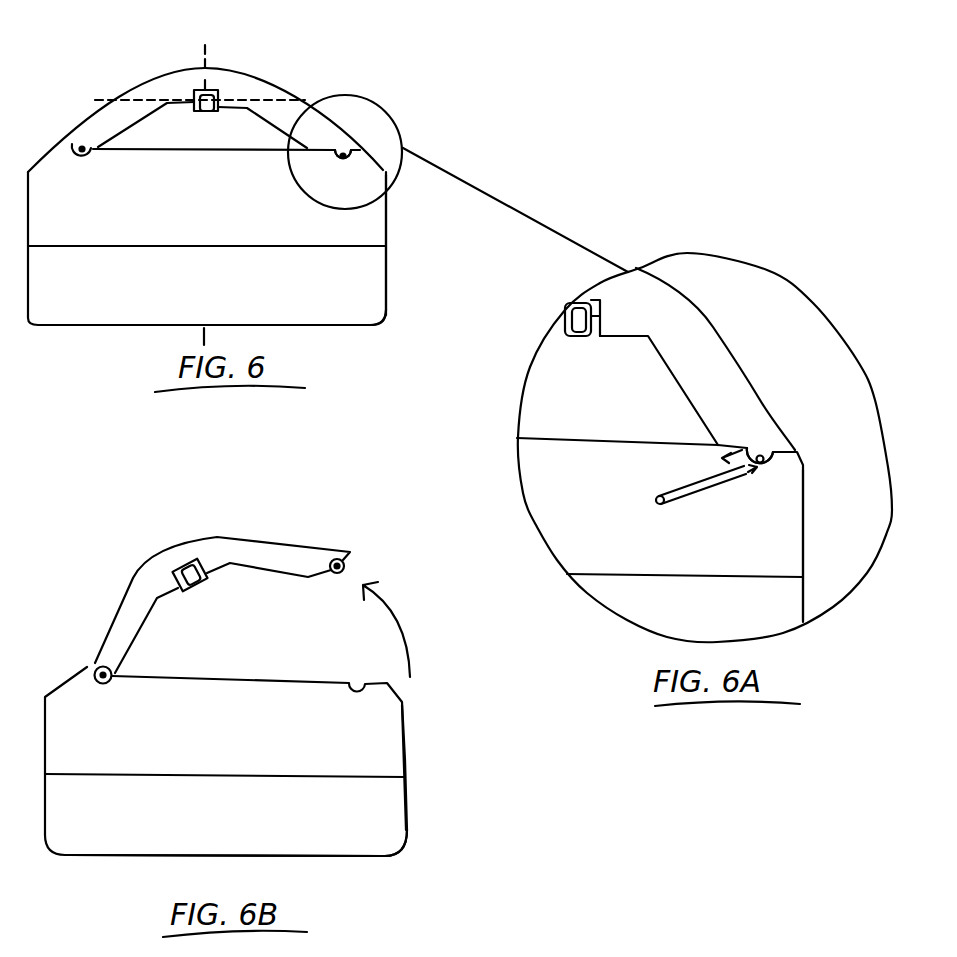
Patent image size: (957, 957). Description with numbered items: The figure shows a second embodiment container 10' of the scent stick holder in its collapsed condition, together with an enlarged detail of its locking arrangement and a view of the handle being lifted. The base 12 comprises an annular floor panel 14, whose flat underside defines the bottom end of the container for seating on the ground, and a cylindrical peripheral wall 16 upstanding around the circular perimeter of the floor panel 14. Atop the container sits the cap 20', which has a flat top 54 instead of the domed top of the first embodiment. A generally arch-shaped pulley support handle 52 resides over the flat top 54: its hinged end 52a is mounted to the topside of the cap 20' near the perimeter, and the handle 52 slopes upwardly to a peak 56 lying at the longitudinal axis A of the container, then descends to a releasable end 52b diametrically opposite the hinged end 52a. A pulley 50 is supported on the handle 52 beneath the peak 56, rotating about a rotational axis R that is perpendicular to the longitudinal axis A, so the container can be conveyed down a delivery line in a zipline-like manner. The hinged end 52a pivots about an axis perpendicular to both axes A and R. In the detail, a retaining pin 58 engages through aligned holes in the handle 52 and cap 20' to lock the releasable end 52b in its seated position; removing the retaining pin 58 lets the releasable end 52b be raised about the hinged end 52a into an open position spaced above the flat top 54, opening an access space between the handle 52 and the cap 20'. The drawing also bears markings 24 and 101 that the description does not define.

In FIG. 6, the container 10' is at (353, 245).
In FIG. 6, the base 12 is at (386, 306).
In FIG. 6A, the base 12 is at (801, 605).
In FIG. 6B, the base 12 is at (393, 845).
In FIG. 6, the floor panel 14 is at (322, 328).
In FIG. 6B, the floor panel 14 is at (346, 857).
In FIG. 6, the cylindrical peripheral wall 16 is at (350, 318).
In FIG. 6B, the cylindrical peripheral wall 16 is at (391, 818).
In FIG. 6, the cap 20' is at (241, 224).
In FIG. 6A, the cap 20' is at (685, 488).
In FIG. 6B, the cap 20' is at (251, 745).
In FIG. 6, the side edge of visor body 24 is at (385, 206).
In FIG. 6A, the side edge of visor body 24 is at (788, 503).
In FIG. 6B, the side edge of visor body 24 is at (392, 760).
In FIG. 6, the pulley 50 is at (207, 113).
In FIG. 6A, the pulley 50 is at (582, 338).
In FIG. 6B, the pulley 50 is at (194, 587).
In FIG. 6, the pulley support handle 52 is at (274, 100).
In FIG. 6A, the pulley support handle 52 is at (700, 328).
In FIG. 6B, the pulley support handle 52 is at (268, 558).
In FIG. 6, the hinged end 52a is at (78, 136).
In FIG. 6B, the hinged end 52a is at (98, 650).
In FIG. 6, the releasable end 52b is at (349, 150).
In FIG. 6A, the releasable end 52b is at (773, 440).
In FIG. 6B, the releasable end 52b is at (329, 555).
In FIG. 6, the flat top 54 is at (178, 142).
In FIG. 6, the peak 56 is at (213, 70).
In FIG. 6A, the retaining pin 58 is at (691, 498).
In FIG. 6B, the rotation direction of arm 101 is at (310, 665).
In FIG. 6, the rotational axis R is at (104, 100).
In FIG. 6, the longitudinal axis A is at (206, 340).